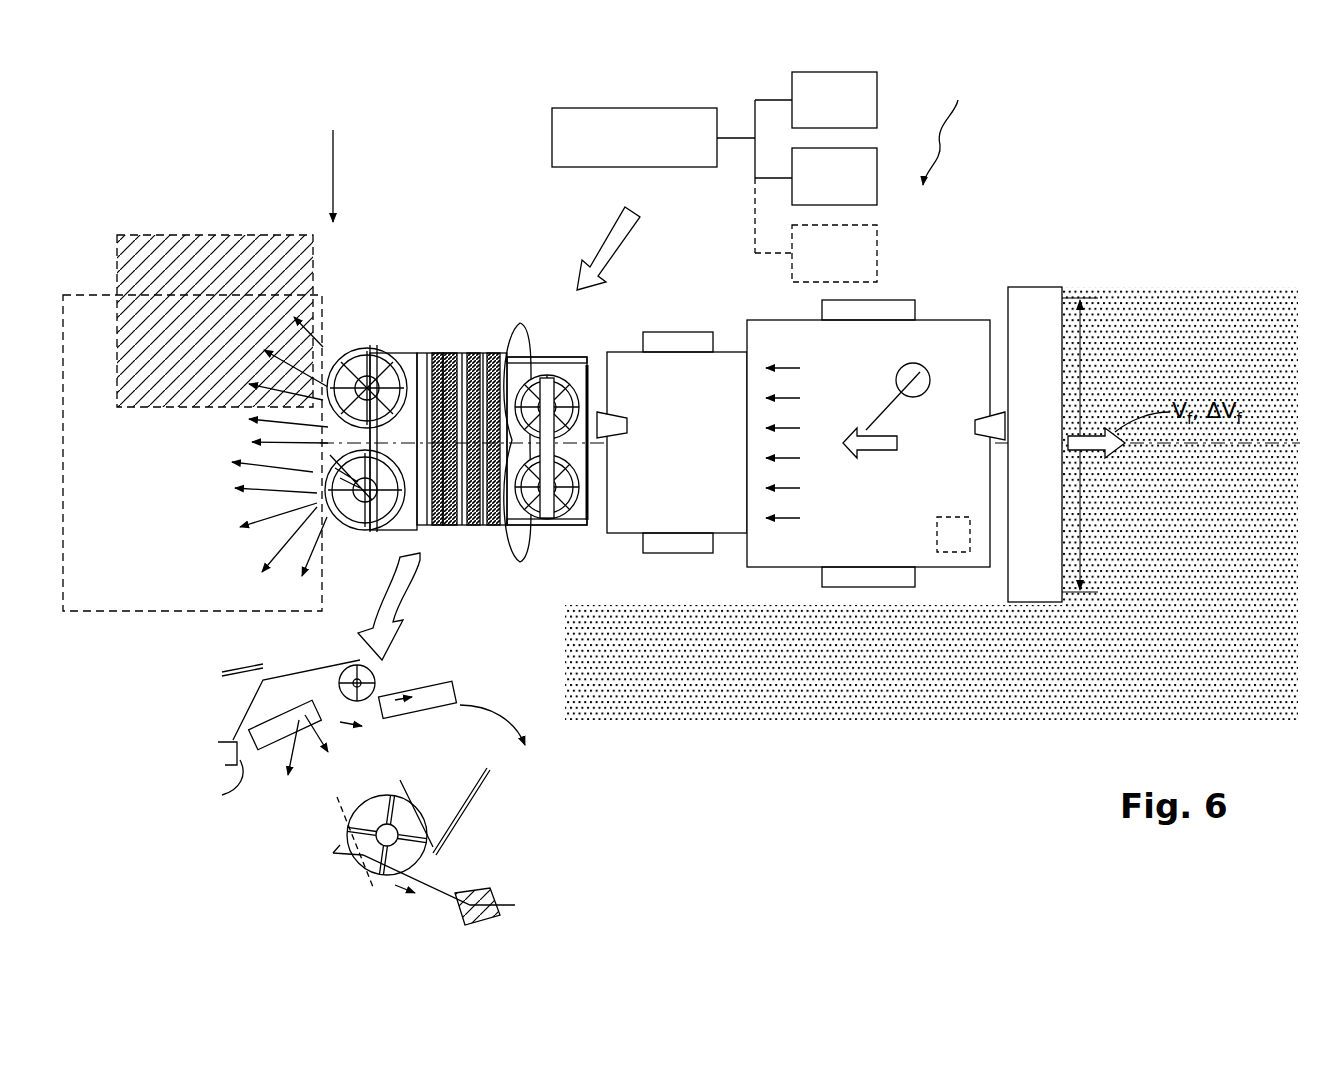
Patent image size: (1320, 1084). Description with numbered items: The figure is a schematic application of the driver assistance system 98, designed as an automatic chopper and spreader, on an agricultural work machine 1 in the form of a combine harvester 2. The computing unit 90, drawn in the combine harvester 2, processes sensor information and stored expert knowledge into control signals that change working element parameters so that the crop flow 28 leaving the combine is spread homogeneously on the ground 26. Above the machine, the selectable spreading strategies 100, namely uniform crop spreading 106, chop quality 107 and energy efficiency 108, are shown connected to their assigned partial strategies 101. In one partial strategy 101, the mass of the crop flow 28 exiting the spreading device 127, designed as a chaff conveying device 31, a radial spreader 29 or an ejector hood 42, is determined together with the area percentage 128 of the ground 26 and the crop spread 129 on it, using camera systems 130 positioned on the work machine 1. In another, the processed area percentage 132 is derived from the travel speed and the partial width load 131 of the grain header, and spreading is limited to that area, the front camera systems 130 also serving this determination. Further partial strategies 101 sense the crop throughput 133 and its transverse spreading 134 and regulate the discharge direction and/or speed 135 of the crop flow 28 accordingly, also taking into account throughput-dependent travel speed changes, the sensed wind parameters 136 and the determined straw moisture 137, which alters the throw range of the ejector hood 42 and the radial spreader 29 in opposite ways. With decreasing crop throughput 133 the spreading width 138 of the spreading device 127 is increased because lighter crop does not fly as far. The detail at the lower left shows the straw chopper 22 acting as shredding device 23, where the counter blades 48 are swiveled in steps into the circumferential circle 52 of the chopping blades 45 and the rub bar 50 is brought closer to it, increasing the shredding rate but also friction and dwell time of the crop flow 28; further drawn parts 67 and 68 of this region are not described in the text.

The agricultural work machine 1 is at (798, 546).
The combine harvester 2 is at (780, 545).
The straw chopper 22 is at (456, 514).
The shredding device 23 is at (456, 514).
The ground 26 is at (536, 417).
The crop flow 28 is at (335, 360).
The radial spreader 29 is at (421, 775).
The chaff conveying device 31 is at (421, 775).
The ejector hood 42 is at (421, 775).
The chopping blades 45 is at (385, 672).
The counter blades 48 is at (340, 690).
The rub bar 50 is at (348, 725).
The circumferential circle 52 is at (387, 700).
The knife bar 67 is at (403, 360).
The conveying belt 68 is at (417, 353).
The computing unit 90 is at (947, 517).
The driver assistance system 98 is at (950, 129).
The spreading strategies 100 is at (608, 137).
The partial strategies 101 is at (816, 177).
The spreading strategy uniform crop spreading 106 is at (608, 137).
The spreading strategy chop quality 107 is at (608, 137).
The spreading strategy energy efficiency 108 is at (552, 155).
The spreading device 127 is at (421, 775).
The area percentage 128 is at (215, 289).
The crop spread 129 is at (249, 250).
The camera systems 130 is at (978, 412).
The partial width load 131 is at (1083, 333).
The processed area percentage 132 is at (192, 425).
The crop throughput 133 is at (877, 460).
The transverse spreading 134 is at (800, 490).
The discharge direction and/or speed 135 is at (282, 552).
The wind parameters 136 is at (334, 168).
The straw moisture 137 is at (896, 380).
The spreading width 138 is at (192, 425).